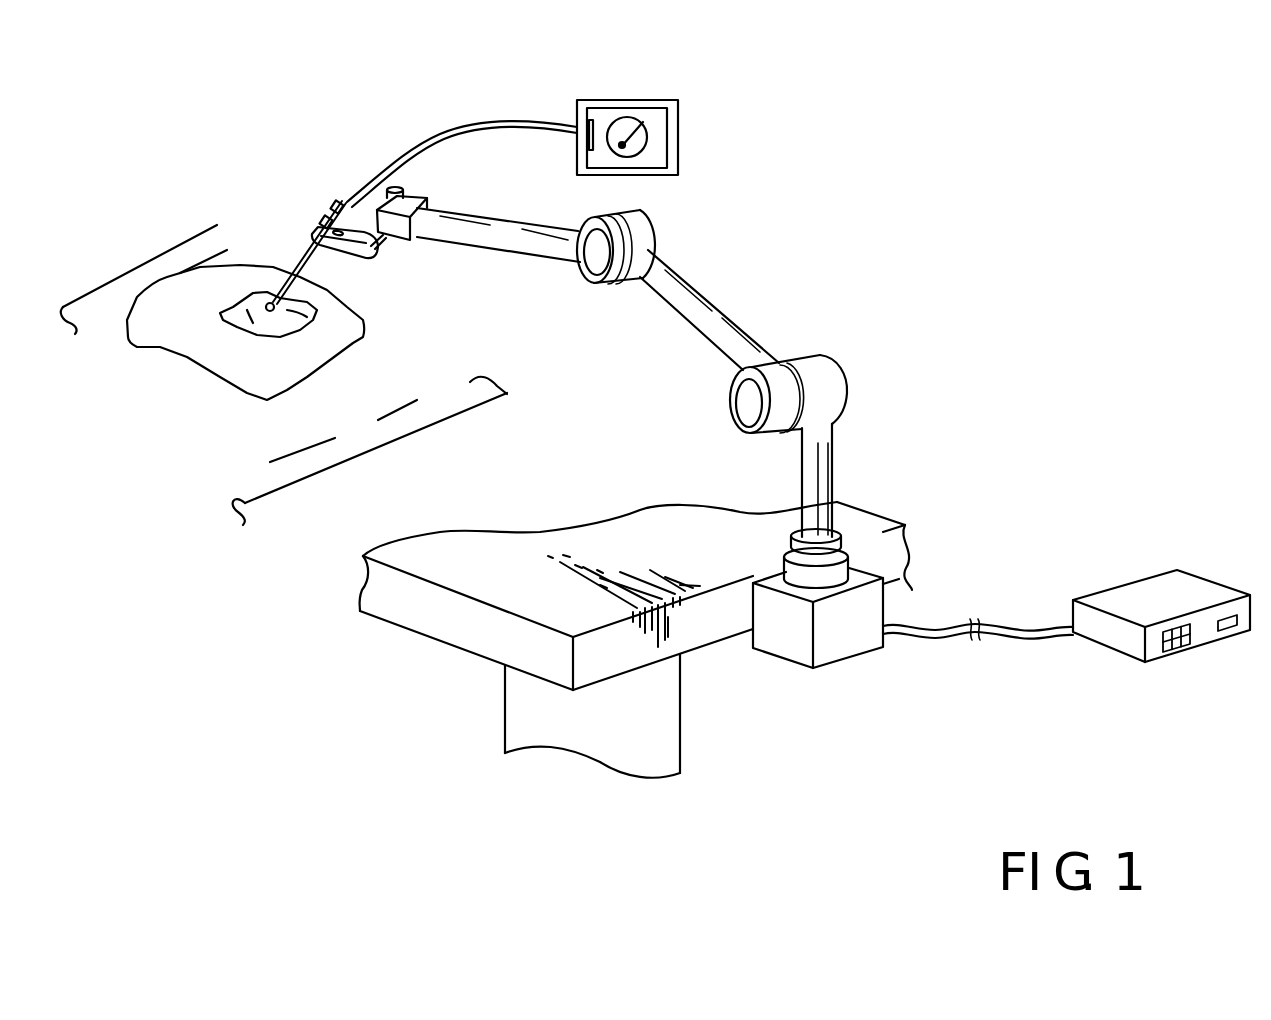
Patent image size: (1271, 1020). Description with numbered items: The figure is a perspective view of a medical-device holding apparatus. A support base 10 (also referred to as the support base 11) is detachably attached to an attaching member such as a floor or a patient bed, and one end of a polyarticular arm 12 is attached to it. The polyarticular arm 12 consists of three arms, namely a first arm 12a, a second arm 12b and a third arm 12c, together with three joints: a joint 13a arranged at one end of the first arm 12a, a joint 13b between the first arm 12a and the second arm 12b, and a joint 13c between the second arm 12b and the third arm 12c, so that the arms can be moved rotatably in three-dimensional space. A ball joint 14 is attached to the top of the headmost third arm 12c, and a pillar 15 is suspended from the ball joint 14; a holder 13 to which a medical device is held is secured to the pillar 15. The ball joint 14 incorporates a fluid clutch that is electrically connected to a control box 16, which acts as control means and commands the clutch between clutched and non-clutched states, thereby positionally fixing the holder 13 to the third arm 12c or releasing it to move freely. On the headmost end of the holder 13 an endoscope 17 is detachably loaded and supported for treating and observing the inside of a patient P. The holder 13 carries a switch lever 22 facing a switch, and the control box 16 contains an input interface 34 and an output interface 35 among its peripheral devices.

The support base 10 is at (398, 608).
The support base 11 is at (845, 648).
The polyarticular arm 12 is at (770, 263).
The first arm 12a is at (833, 460).
The second arm 12b is at (710, 298).
The third arm 12c is at (503, 223).
The holder 13 is at (378, 260).
The joint 13a is at (850, 555).
The joint 13b is at (837, 383).
The joint 13c is at (650, 230).
The ball joint 14 is at (413, 201).
The pillar 15 is at (370, 243).
The control box 16 is at (1195, 590).
The endoscope 17 is at (296, 263).
The switch lever 22 is at (343, 258).
The input interface 34 is at (1177, 647).
The output interface 35 is at (1230, 627).
The patient P is at (417, 413).